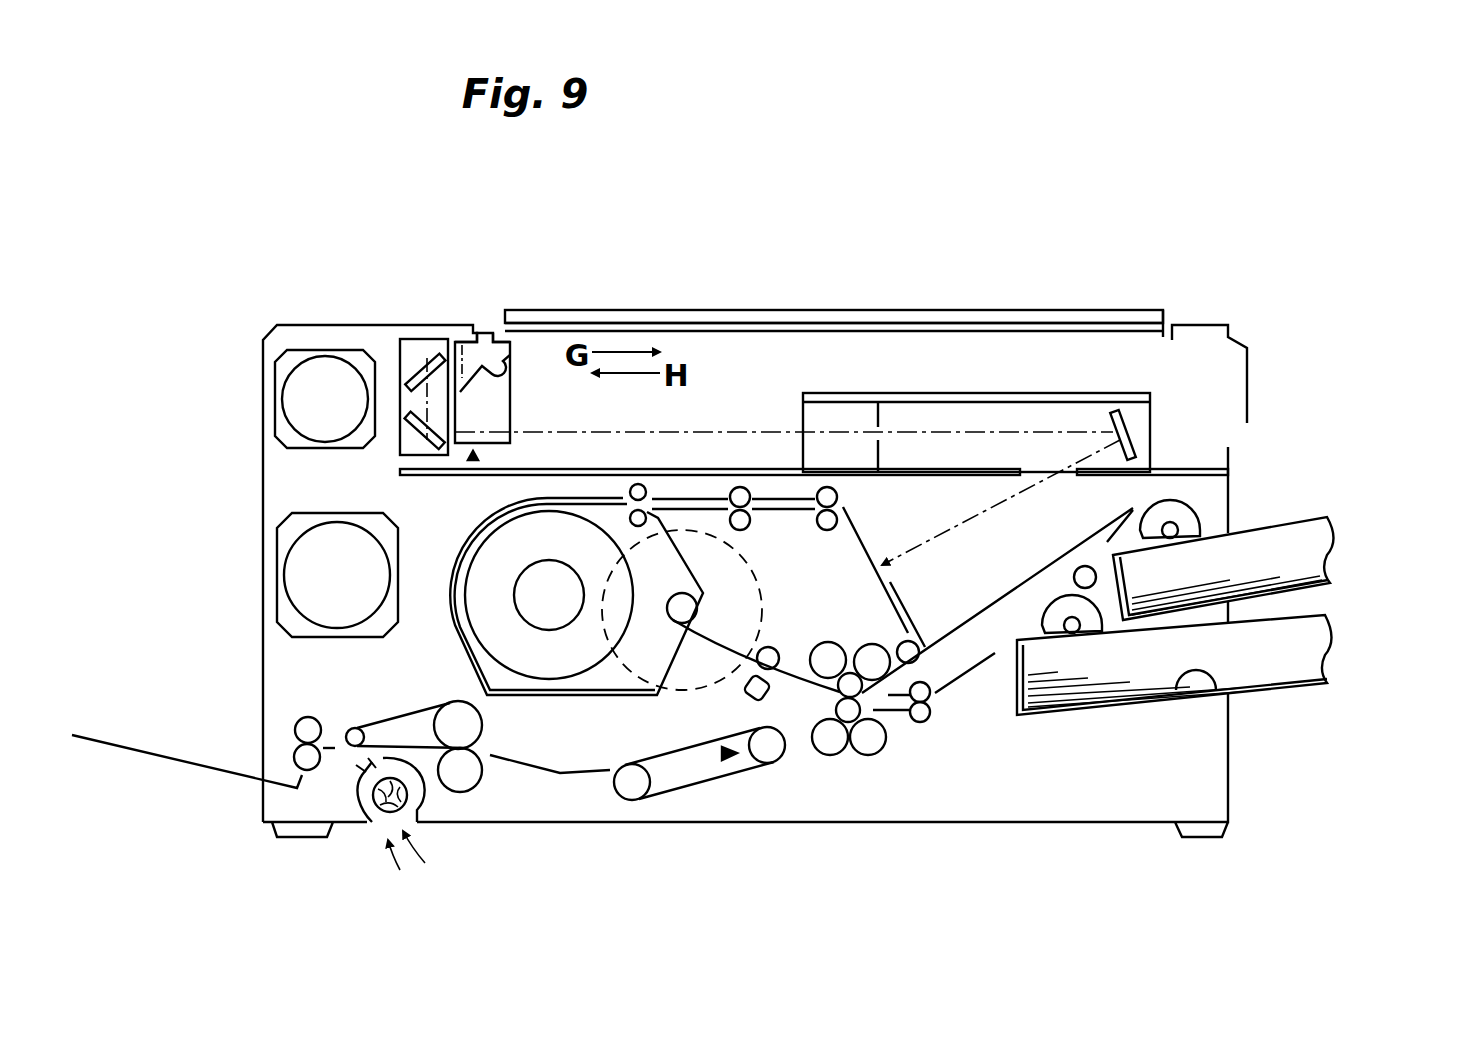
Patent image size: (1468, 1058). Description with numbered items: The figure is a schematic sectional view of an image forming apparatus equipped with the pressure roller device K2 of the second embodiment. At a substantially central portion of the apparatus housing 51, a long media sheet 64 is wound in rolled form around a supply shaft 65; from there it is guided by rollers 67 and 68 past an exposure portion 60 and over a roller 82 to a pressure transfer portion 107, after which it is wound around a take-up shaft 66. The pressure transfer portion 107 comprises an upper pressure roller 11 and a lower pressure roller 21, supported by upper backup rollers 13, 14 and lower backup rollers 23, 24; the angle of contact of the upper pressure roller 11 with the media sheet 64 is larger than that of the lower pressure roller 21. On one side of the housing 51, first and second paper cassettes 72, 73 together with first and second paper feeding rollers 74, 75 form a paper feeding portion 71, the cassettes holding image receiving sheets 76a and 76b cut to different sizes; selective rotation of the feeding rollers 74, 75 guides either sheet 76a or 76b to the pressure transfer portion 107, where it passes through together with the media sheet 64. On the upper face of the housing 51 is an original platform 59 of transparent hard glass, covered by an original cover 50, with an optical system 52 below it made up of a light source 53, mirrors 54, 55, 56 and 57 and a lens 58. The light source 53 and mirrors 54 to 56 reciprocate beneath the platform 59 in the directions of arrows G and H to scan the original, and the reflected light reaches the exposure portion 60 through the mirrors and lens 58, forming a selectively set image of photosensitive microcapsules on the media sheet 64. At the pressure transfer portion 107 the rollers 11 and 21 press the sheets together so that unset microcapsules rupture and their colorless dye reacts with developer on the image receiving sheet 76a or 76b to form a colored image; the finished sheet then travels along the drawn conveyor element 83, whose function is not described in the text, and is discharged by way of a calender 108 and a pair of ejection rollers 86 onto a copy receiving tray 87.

The upper pressure roller 11 is at (836, 697).
The upper backup roller 13 is at (825, 650).
The upper backup roller 14 is at (868, 650).
The lower pressure roller 21 is at (861, 712).
The lower backup roller 23 is at (822, 755).
The lower backup roller 24 is at (877, 735).
The original cover 50 is at (1143, 308).
The apparatus housing 51 is at (1213, 325).
The optical system 52 is at (805, 355).
The light source 53 is at (507, 352).
The mirror 54 is at (480, 347).
The mirror 55 is at (410, 347).
The mirror 56 is at (410, 440).
The mirror 57 is at (1130, 436).
The lens 58 is at (851, 413).
The original platform 59 is at (1070, 328).
The exposure portion 60 is at (880, 560).
The media sheet 64 is at (483, 540).
The supply shaft 65 is at (513, 597).
The take-up shaft 66 is at (685, 614).
The roller 67 is at (633, 487).
The roller 68 is at (822, 488).
The paper feeding portion 71 is at (1136, 722).
The first paper cassette 72 is at (1332, 586).
The second paper cassette 73 is at (1327, 686).
The first paper feeding roller 74 is at (1140, 525).
The second paper feeding roller 75 is at (1043, 607).
The image receiving sheet 76a is at (1267, 575).
The image receiving sheet 76b is at (1215, 684).
The roller 82 is at (920, 650).
The conveyor belt 83 is at (695, 785).
The ejection rollers 86 is at (298, 722).
The copy receiving tray 87 is at (178, 763).
The pressure transfer portion 107 is at (852, 765).
The calender 108 is at (406, 707).
The pressure roller device K2 is at (882, 762).